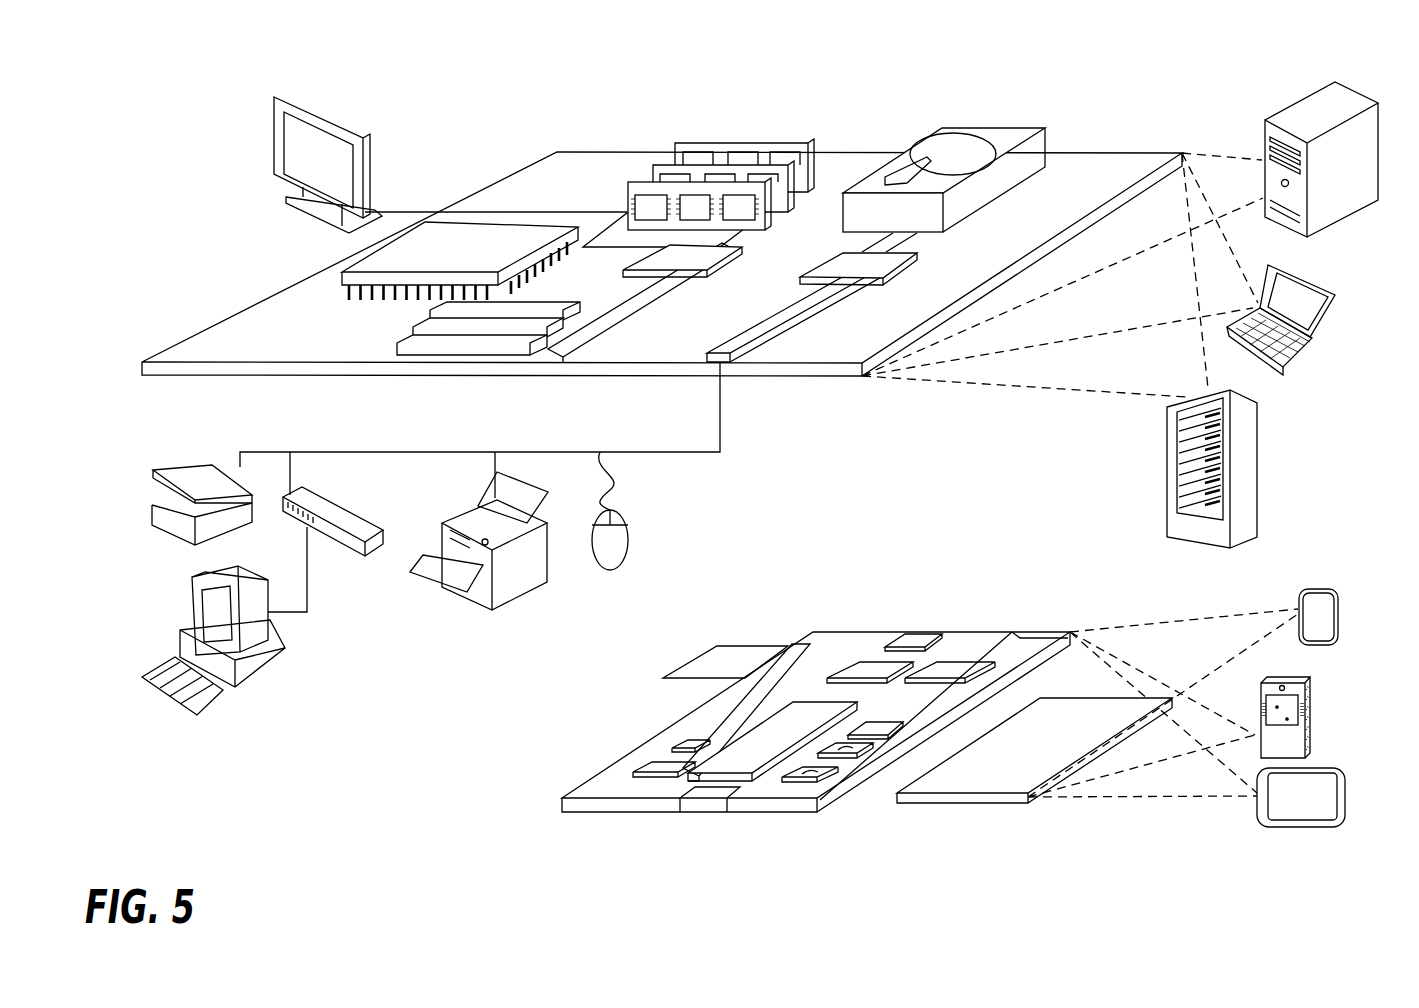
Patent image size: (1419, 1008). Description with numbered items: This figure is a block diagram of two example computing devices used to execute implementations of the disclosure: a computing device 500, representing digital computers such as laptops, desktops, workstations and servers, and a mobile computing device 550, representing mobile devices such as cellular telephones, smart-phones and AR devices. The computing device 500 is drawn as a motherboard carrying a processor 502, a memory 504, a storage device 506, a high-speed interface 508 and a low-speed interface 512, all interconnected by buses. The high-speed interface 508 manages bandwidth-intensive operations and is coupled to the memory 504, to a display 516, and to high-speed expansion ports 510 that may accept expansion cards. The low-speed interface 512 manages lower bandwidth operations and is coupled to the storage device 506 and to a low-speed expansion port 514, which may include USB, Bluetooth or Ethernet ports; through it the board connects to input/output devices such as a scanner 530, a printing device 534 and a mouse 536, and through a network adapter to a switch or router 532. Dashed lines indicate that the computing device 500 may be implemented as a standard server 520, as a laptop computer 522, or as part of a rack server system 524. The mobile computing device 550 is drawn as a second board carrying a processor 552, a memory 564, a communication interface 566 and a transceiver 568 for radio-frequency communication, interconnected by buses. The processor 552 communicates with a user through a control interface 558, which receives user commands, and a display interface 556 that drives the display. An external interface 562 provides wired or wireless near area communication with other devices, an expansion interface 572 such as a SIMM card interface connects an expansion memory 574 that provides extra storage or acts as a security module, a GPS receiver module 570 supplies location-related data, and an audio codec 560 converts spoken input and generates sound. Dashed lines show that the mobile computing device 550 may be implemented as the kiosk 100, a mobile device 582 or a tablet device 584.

The computing device 500 is at (761, 359).
The processor 502 is at (346, 274).
The memory 504 is at (705, 142).
The storage device 506 is at (990, 127).
The high-speed interface 508 is at (668, 258).
The high-speed expansion ports 510 is at (413, 338).
The low-speed interface 512 is at (843, 260).
The low-speed expansion port 514 is at (730, 360).
The display 516 is at (279, 94).
The standard server 520 is at (1265, 137).
The laptop computer 522 is at (1313, 273).
The rack server system 524 is at (1167, 470).
The scanner 530 is at (192, 468).
The switch or router 532 is at (348, 552).
The printing device 534 is at (520, 597).
The mouse 536 is at (627, 550).
The mobile computing device 550 is at (939, 722).
The processor 552 is at (772, 748).
The display interface 556 is at (830, 773).
The control interface 558 is at (865, 757).
The audio codec 560 is at (872, 722).
The external interface 562 is at (708, 804).
The memory 564 is at (652, 760).
The communication interface 566 is at (880, 670).
The transceiver 568 is at (961, 672).
The GPS receiver module 570 is at (917, 632).
The expansion interface 572 is at (798, 646).
The expansion memory 574 is at (720, 645).
The mobile device 582 is at (1318, 589).
The tablet device 584 is at (1345, 798).
The kiosk 100 is at (1310, 688).